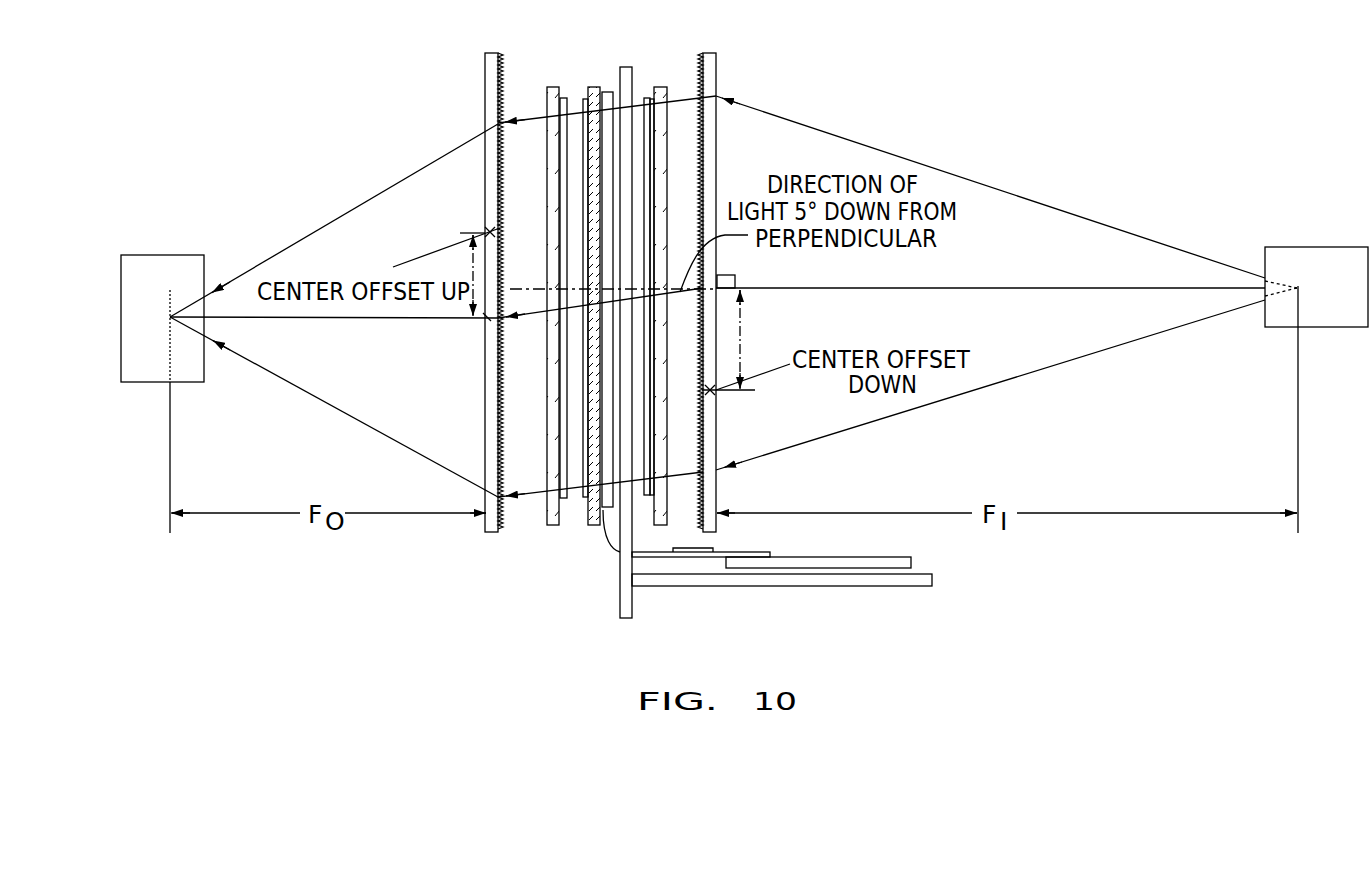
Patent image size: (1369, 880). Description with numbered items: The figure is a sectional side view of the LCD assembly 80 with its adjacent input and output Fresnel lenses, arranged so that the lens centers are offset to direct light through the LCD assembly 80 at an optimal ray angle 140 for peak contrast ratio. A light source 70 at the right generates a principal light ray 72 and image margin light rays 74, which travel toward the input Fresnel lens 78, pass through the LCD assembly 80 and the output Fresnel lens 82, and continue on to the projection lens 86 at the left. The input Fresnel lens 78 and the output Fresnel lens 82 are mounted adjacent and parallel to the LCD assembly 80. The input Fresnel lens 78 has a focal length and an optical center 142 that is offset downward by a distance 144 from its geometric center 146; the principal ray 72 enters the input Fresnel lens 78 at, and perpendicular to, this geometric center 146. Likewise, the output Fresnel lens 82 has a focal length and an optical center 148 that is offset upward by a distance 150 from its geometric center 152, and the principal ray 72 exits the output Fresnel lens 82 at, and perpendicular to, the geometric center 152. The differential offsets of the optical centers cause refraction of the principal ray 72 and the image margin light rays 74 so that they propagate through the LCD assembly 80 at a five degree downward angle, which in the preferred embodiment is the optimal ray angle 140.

The light source 70 is at (1317, 262).
The principal light ray 72 is at (347, 320).
The image margin light rays 74 is at (306, 231).
The input Fresnel lens 78 is at (720, 73).
The LCD assembly 80 is at (562, 547).
The output Fresnel lens 82 is at (490, 73).
The projection lens 86 is at (163, 267).
The optimal ray angle 140 is at (520, 284).
The optical center 142 is at (712, 391).
The distance 144 is at (742, 340).
The geometric center 146 is at (719, 287).
The optical center 148 is at (488, 230).
The distance 150 is at (470, 270).
The geometric center 152 is at (486, 320).